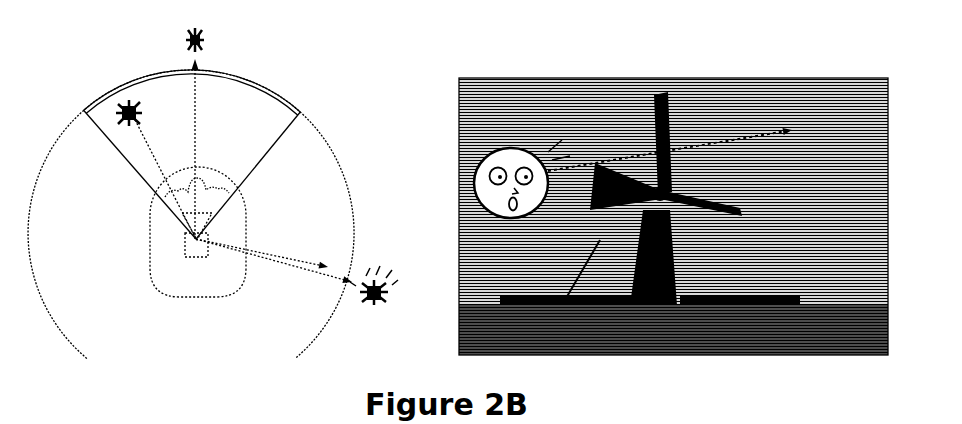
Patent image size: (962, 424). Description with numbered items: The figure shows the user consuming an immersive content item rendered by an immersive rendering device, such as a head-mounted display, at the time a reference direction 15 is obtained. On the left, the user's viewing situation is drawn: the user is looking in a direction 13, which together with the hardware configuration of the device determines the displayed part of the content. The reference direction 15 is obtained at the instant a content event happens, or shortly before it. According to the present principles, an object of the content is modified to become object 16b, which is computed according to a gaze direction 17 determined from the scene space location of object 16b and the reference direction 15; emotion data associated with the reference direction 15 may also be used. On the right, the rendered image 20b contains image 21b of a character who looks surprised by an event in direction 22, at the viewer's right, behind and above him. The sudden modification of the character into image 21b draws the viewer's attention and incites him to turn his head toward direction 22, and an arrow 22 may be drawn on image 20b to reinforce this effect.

The direction 13 is at (195, 102).
The reference direction 15 is at (283, 265).
The object 16b is at (128, 100).
The gaze direction 17 is at (270, 222).
The image 20b is at (738, 78).
The image 21b is at (503, 149).
The direction 22 is at (740, 148).